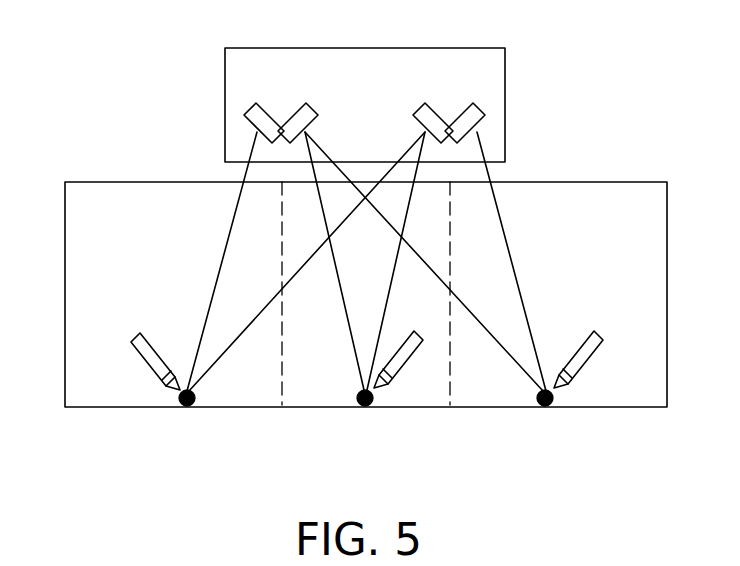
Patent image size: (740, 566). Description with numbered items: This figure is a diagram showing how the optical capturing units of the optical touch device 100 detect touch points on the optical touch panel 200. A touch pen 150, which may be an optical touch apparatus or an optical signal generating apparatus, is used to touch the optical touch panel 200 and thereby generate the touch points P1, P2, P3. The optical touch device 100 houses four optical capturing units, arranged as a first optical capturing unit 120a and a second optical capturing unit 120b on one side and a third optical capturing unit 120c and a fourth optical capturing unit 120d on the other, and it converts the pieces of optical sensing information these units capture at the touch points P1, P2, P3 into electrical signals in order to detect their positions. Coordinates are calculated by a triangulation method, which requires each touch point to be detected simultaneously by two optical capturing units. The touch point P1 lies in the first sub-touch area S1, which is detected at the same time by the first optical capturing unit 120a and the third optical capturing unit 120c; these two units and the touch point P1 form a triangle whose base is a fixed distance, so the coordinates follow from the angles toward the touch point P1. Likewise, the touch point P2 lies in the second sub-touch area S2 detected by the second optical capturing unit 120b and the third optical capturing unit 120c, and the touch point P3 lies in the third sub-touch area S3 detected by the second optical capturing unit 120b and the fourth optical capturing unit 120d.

The optical touch device 100 is at (443, 48).
The first optical capturing unit 120a is at (254, 115).
The second optical capturing unit 120b is at (300, 110).
The third optical capturing unit 120c is at (432, 110).
The fourth optical capturing unit 120d is at (473, 108).
The optical touch panel 200 is at (603, 182).
The touch pen 150 is at (150, 358).
The touch point P1 is at (188, 410).
The touch point P2 is at (367, 408).
The touch point P3 is at (546, 408).
The first sub-touch area S1 is at (306, 261).
The second sub-touch area S2 is at (366, 261).
The third sub-touch area S3 is at (425, 261).